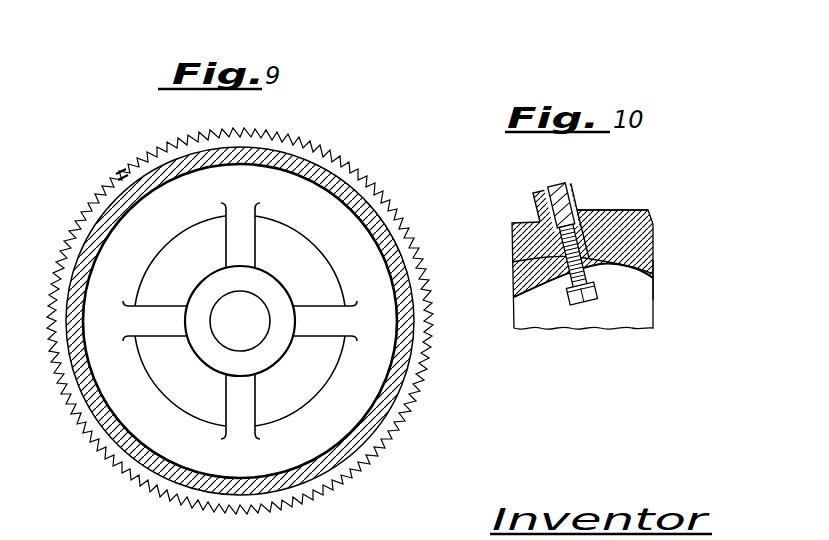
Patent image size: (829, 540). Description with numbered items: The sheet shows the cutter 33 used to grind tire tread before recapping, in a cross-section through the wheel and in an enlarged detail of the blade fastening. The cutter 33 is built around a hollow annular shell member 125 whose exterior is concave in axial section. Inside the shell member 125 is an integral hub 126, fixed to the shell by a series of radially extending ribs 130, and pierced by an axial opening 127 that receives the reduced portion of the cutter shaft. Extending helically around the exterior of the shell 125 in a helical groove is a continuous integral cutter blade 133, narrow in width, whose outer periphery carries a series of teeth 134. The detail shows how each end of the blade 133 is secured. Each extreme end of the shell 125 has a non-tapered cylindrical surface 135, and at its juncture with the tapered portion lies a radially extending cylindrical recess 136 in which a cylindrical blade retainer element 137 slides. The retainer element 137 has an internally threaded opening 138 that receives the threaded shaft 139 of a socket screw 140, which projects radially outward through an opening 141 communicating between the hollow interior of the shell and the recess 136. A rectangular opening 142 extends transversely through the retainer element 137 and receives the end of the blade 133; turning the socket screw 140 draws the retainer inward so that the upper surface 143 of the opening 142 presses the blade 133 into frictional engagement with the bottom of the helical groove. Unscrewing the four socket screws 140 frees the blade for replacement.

In FIG. 9, the cutter 33 is at (126, 497).
In FIG. 9, the hollow annular shell member 125 is at (380, 417).
In FIG. 10, the hollow annular shell member 125 is at (518, 215).
In FIG. 9, the hub 126 is at (277, 353).
In FIG. 9, the axial opening 127 is at (222, 330).
In FIG. 9, the radially extending ribs 130 is at (312, 308).
In FIG. 9, the cutter blade 133 is at (192, 135).
In FIG. 10, the cutter blade 133 is at (580, 207).
In FIG. 9, the teeth 134 is at (122, 170).
In FIG. 10, the non-tapered cylindrical surface 135 is at (647, 208).
In FIG. 10, the cylindrical recess 136 is at (587, 222).
In FIG. 10, the blade retainer element 137 is at (572, 200).
In FIG. 10, the internally threaded opening 138 is at (540, 255).
In FIG. 10, the threaded shaft 139 is at (537, 272).
In FIG. 10, the socket screw 140 is at (563, 300).
In FIG. 10, the opening 141 is at (653, 273).
In FIG. 10, the rectangular opening 142 is at (540, 230).
In FIG. 10, the upper surface 143 is at (560, 195).